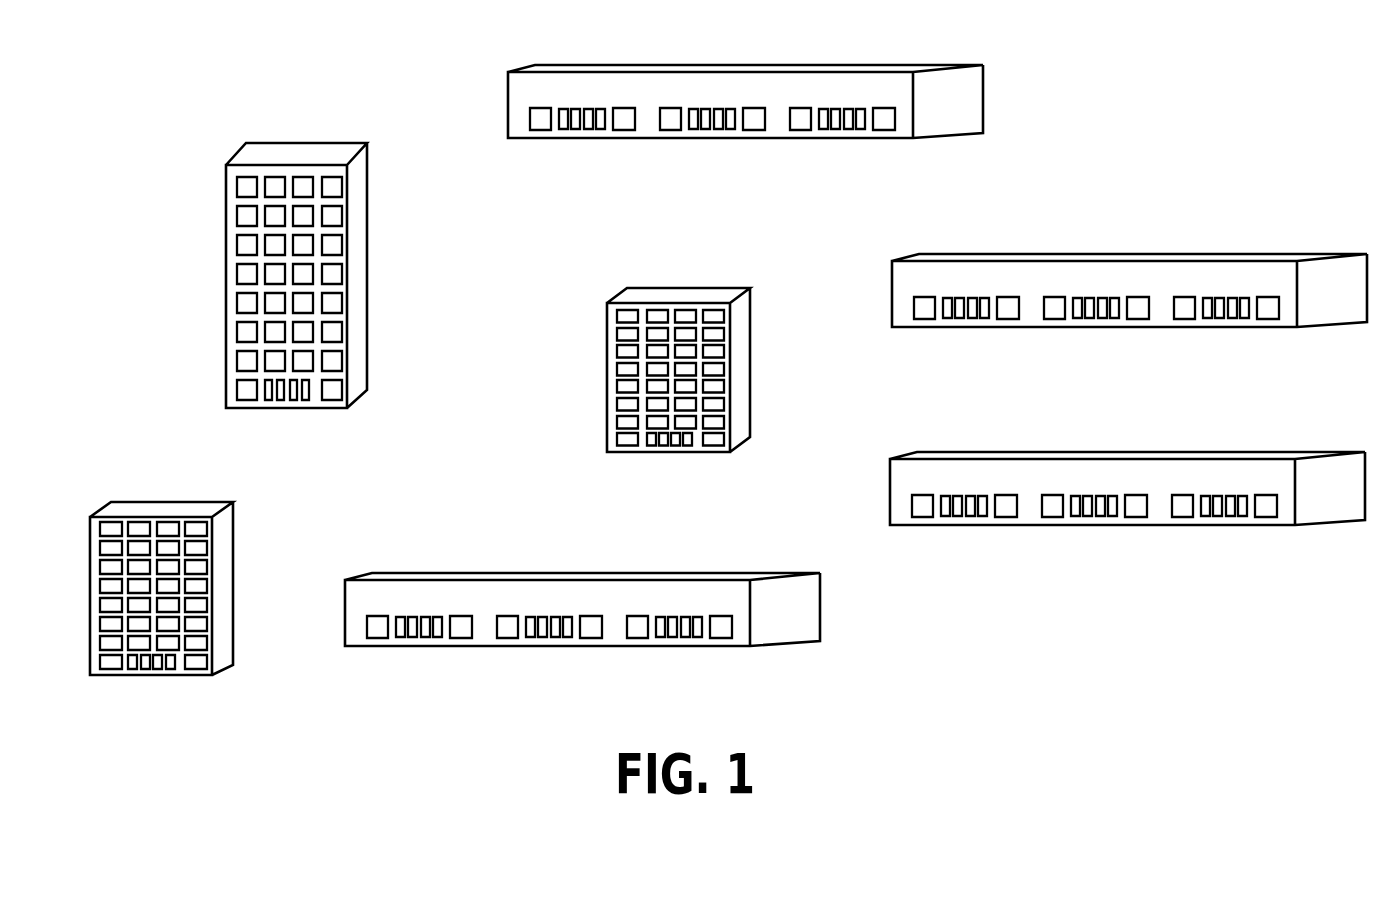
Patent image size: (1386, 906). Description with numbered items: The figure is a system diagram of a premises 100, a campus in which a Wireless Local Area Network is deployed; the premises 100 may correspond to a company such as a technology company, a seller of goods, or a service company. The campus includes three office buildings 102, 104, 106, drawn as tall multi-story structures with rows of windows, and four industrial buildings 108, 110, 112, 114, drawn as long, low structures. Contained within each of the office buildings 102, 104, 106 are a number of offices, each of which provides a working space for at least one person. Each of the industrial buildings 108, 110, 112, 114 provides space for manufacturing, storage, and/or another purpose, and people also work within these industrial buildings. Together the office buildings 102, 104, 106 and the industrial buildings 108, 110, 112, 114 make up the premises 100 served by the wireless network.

The premises 100 is at (1172, 658).
The office building 102 is at (233, 553).
The office building 104 is at (368, 258).
The office building 106 is at (752, 332).
The industrial building 108 is at (683, 572).
The industrial building 110 is at (1230, 450).
The industrial building 112 is at (1230, 253).
The industrial building 114 is at (848, 65).